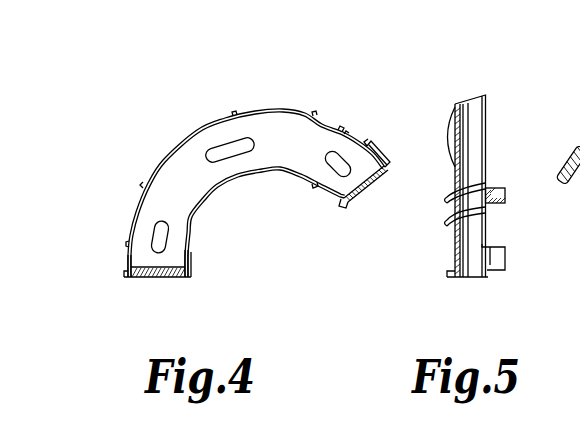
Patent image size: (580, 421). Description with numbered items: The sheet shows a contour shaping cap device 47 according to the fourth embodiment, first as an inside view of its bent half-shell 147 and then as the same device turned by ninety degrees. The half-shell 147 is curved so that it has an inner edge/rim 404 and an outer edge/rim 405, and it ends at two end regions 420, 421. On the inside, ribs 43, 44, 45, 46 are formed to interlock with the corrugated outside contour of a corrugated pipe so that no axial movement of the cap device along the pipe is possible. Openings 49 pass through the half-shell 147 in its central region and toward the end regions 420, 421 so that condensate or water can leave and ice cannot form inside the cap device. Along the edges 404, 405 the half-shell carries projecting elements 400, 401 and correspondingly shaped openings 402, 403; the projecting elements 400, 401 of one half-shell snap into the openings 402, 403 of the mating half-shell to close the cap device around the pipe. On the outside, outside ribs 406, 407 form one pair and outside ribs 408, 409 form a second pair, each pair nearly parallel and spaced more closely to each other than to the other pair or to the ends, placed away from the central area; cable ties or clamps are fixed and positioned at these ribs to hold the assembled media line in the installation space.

In FIG. 4, the contour shaping cap device 47 is at (192, 130).
In FIG. 5, the contour shaping cap device 47 is at (490, 122).
In FIG. 4, the half-shell 147 is at (178, 152).
In FIG. 5, the half-shell 147 is at (458, 110).
In FIG. 4, the outside rib 407 is at (142, 188).
In FIG. 5, the outside rib 407 is at (449, 194).
In FIG. 4, the outside rib 406 is at (134, 212).
In FIG. 5, the outside rib 406 is at (449, 222).
In FIG. 4, the opening 49 is at (160, 238).
In FIG. 4, the rib 44 is at (128, 262).
In FIG. 4, the rib 43 is at (126, 279).
In FIG. 4, the end region 421 is at (156, 276).
In FIG. 4, the opening 403 is at (193, 262).
In FIG. 4, the inner edge/rim 404 is at (250, 173).
In FIG. 4, the outer edge/rim 405 is at (290, 112).
In FIG. 4, the outside rib 409 is at (323, 110).
In FIG. 4, the end region 420 is at (366, 150).
In FIG. 4, the opening 402 is at (398, 140).
In FIG. 5, the opening 402 is at (572, 148).
In FIG. 4, the outside rib 408 is at (315, 184).
In FIG. 4, the rib 45 is at (352, 206).
In FIG. 4, the rib 46 is at (364, 206).
In FIG. 5, the projecting element 400 is at (506, 197).
In FIG. 5, the projecting element 401 is at (506, 262).